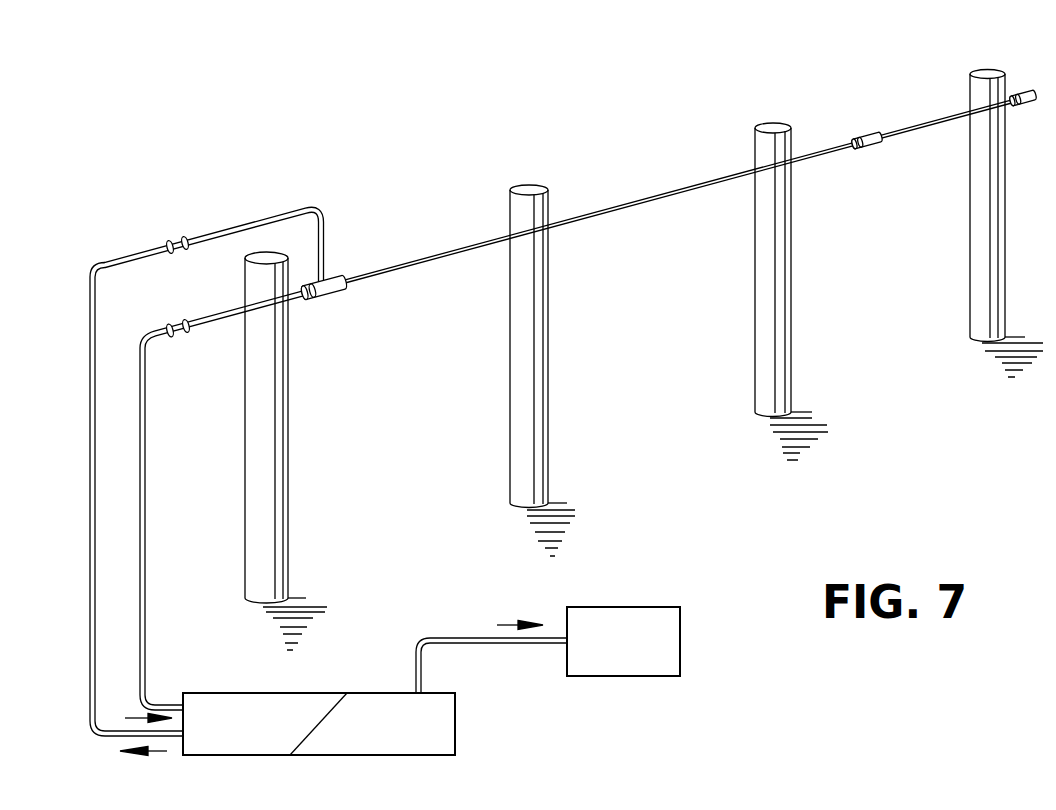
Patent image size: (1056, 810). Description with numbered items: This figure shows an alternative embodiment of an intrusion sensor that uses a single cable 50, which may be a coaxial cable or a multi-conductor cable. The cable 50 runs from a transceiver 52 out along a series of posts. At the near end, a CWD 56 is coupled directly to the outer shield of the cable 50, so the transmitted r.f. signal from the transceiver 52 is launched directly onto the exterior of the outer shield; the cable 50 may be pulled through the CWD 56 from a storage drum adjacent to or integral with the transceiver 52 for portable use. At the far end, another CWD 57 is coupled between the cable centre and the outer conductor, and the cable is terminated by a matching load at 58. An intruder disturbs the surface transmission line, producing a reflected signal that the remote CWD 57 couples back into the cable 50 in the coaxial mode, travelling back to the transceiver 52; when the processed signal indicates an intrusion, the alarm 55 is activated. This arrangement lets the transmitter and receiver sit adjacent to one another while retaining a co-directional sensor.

The coaxial cable 50 is at (682, 192).
The transceiver 52 is at (300, 693).
The alarm 55 is at (605, 607).
The CWD 56 is at (326, 294).
The CWD 57 is at (873, 132).
The matching load 58 is at (1028, 91).